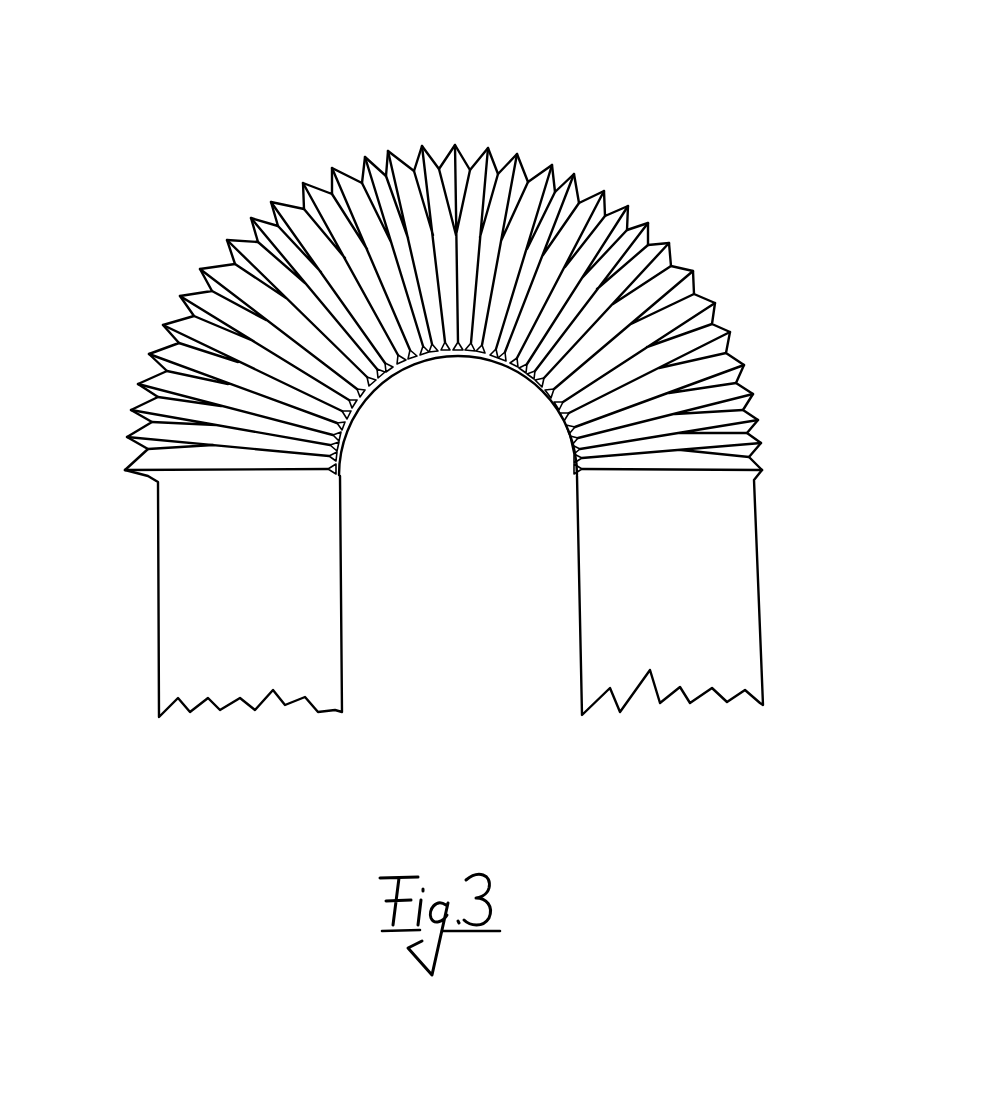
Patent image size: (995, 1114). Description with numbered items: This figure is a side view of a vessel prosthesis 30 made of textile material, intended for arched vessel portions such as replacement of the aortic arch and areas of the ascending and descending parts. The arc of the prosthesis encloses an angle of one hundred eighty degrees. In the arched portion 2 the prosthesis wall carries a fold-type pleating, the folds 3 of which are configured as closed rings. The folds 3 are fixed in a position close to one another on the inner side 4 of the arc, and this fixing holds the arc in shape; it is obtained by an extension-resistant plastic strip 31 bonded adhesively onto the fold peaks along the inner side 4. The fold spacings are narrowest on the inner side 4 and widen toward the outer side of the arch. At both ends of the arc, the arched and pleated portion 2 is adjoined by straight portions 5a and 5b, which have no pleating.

The vessel prosthesis 30 is at (557, 28).
The arched portion 2 is at (730, 188).
The folds 3 is at (700, 333).
The inner side 4 is at (440, 447).
The plastic strip 31 is at (547, 394).
The straight portion 5a is at (860, 617).
The straight portion 5b is at (42, 655).